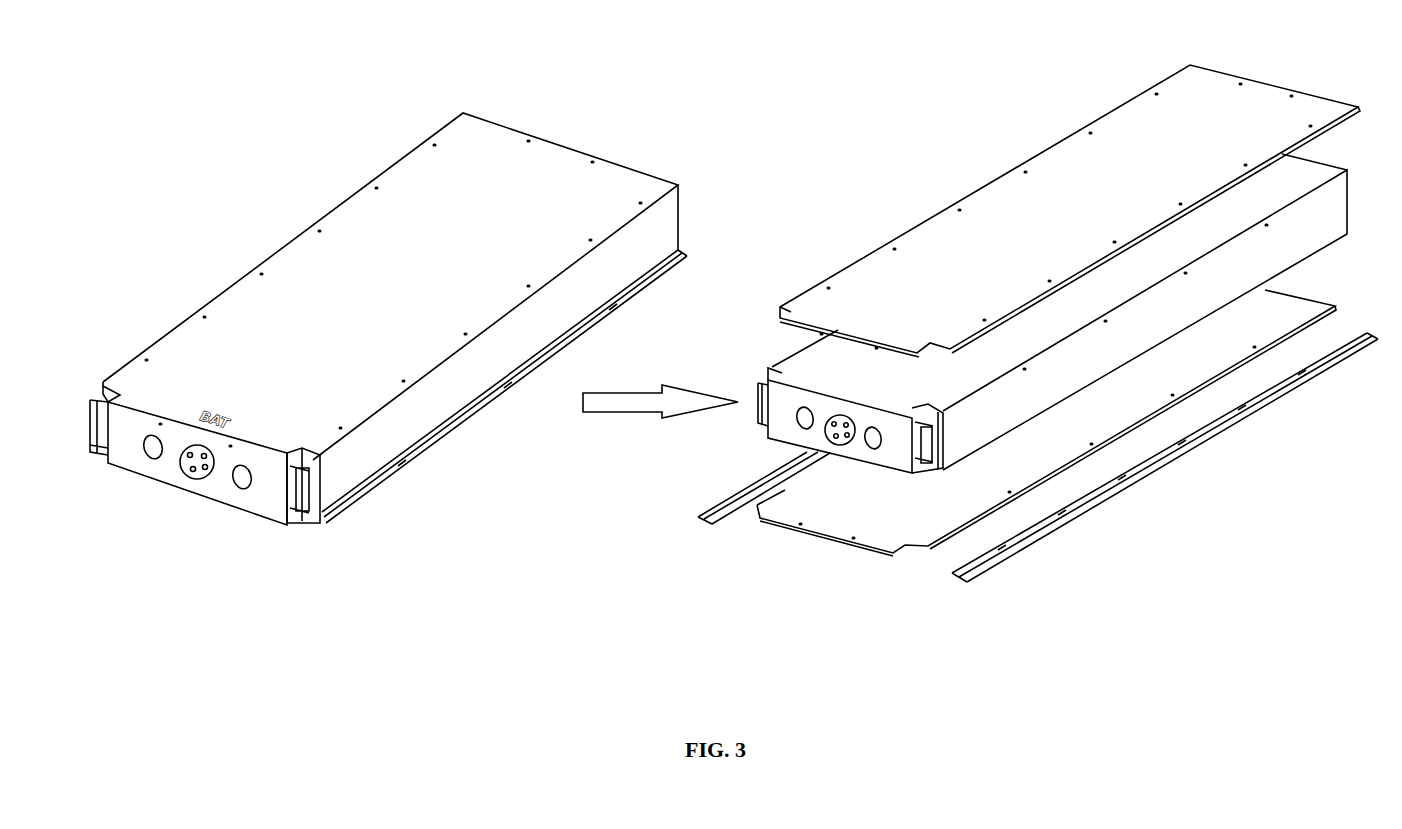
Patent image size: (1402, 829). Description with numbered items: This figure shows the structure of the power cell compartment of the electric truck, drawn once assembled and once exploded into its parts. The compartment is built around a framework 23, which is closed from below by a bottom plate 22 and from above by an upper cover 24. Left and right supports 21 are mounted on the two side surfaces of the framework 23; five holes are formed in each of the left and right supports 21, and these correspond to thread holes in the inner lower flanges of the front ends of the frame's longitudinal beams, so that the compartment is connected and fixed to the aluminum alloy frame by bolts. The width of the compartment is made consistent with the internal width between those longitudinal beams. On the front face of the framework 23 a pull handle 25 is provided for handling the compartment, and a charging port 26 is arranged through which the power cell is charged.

The left and right supports 21 is at (967, 573).
The bottom plate 22 is at (1020, 487).
The framework 23 is at (1117, 350).
The upper cover 24 is at (1195, 203).
The pull handle 25 is at (313, 523).
The charging port 26 is at (200, 479).